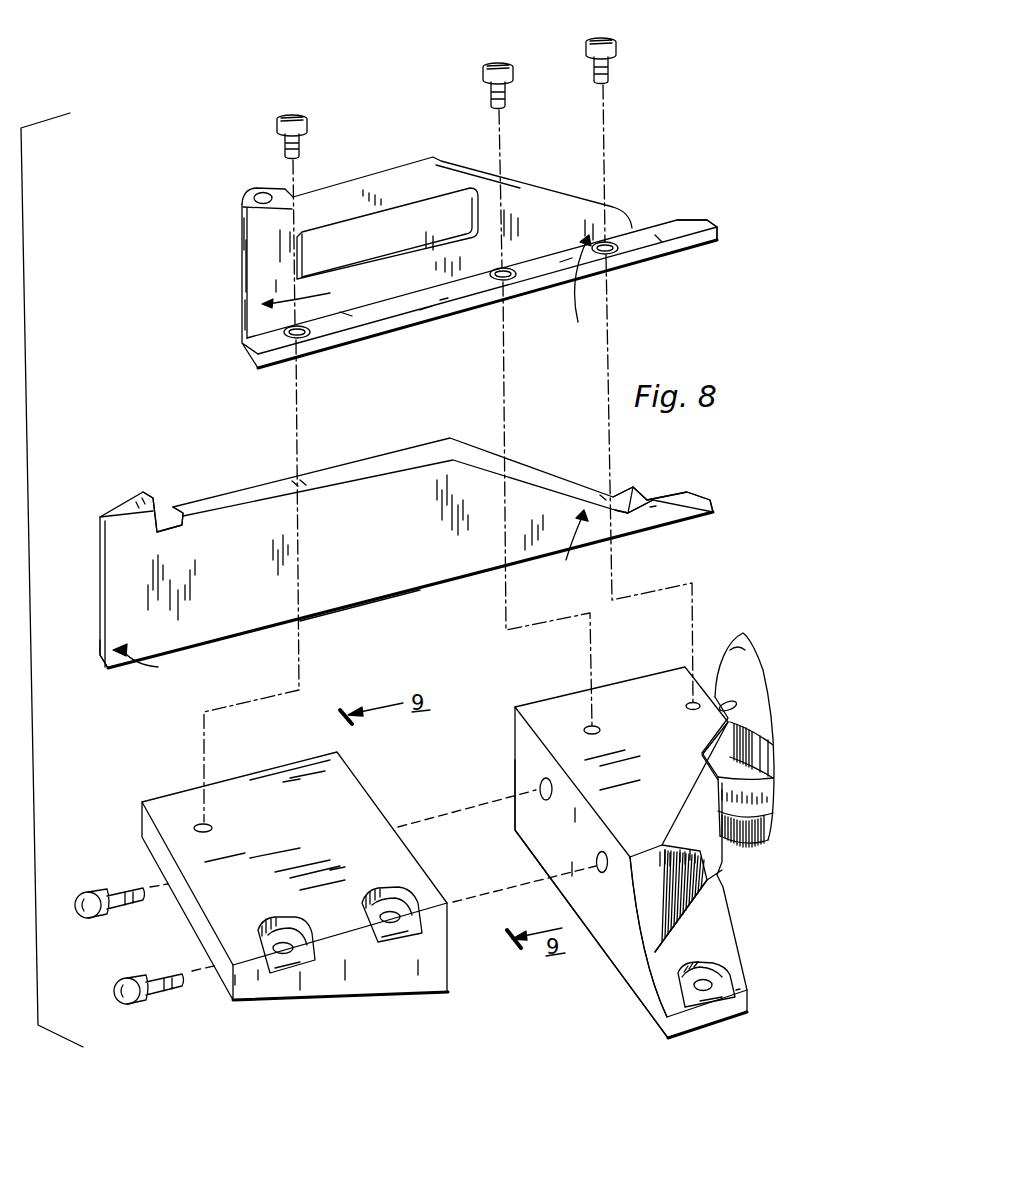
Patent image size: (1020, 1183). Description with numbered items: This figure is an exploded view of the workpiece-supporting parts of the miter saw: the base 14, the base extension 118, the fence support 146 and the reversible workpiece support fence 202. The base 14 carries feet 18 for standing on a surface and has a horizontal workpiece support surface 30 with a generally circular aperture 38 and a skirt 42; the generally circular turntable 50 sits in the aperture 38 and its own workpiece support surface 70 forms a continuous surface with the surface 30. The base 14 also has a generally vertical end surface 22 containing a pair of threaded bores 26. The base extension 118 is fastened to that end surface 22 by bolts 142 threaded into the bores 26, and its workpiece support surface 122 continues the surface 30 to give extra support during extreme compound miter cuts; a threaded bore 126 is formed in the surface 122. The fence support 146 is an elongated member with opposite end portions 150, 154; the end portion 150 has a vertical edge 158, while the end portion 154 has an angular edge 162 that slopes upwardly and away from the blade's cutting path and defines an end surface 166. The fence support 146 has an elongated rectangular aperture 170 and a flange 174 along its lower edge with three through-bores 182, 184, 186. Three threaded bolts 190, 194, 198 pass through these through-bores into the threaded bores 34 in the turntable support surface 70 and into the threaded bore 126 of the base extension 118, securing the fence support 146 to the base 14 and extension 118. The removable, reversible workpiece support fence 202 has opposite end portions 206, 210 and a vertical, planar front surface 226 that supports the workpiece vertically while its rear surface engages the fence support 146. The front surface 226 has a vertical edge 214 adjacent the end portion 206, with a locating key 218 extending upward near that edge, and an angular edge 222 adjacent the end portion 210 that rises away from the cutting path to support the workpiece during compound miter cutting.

The base 14 is at (654, 852).
The feet 18 is at (750, 980).
The end surface 22 is at (615, 928).
The threaded bores 26 is at (598, 856).
The workpiece support surface 30 is at (670, 815).
The threaded bores 34 is at (687, 706).
The circular aperture 38 is at (726, 722).
The skirt 42 is at (757, 848).
The turntable 50 is at (762, 728).
The workpiece support surface 70 is at (738, 668).
The base extension 118 is at (257, 876).
The workpiece support surface 122 is at (340, 808).
The threaded bore 126 is at (212, 827).
The bolt 142 is at (131, 972).
The fence support 146 is at (475, 265).
The end portion 150 is at (316, 294).
The end portion 154 is at (570, 280).
The vertical edge 158 is at (241, 262).
The angular edge 162 is at (552, 188).
The end surface 166 is at (693, 232).
The rectangular aperture 170 is at (322, 273).
The flange 174 is at (482, 305).
The through-bore 182 is at (612, 256).
The through-bore 184 is at (505, 283).
The through-bore 186 is at (298, 342).
The threaded bolt 190 is at (617, 51).
The threaded bolt 194 is at (484, 82).
The threaded bolt 198 is at (278, 124).
The workpiece support fence 202 is at (370, 545).
The end portion 206 is at (155, 662).
The end portion 210 is at (564, 549).
The vertical edge 214 is at (100, 662).
The locating key 218 is at (157, 500).
The angular edge 222 is at (558, 488).
The front surface 226 is at (372, 592).